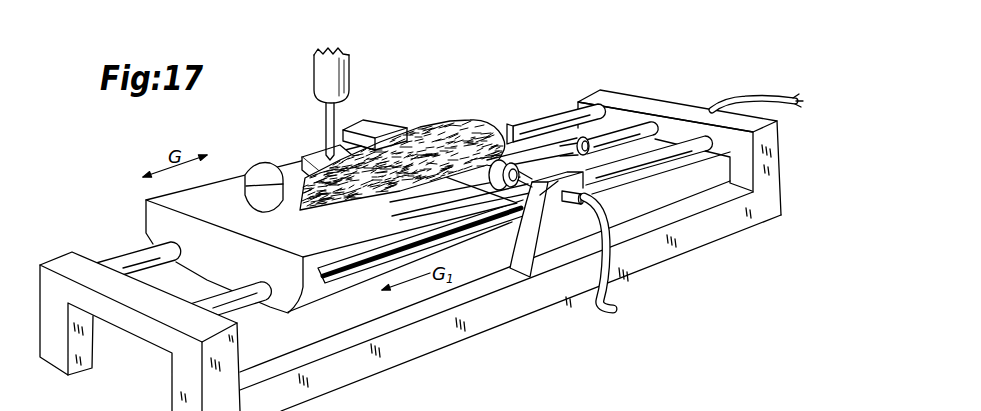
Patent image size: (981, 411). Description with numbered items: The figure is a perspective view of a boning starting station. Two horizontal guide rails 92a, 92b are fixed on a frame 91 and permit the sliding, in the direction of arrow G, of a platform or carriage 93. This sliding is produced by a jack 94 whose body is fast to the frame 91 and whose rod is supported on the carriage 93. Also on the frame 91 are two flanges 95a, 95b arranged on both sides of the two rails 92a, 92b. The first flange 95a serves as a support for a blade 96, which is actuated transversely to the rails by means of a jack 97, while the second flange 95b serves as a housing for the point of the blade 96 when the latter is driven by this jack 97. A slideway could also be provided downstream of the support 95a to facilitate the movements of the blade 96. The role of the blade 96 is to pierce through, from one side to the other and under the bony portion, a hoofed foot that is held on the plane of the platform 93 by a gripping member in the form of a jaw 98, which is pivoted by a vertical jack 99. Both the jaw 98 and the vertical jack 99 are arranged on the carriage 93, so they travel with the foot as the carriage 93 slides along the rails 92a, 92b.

The frame 91 is at (34, 283).
The horizontal guide rail 92a is at (688, 150).
The horizontal guide rail 92b is at (558, 120).
The platform or carriage 93 is at (151, 223).
The jack 94 is at (618, 130).
The flange 95a is at (567, 240).
The flange 95b is at (372, 127).
The blade 96 is at (410, 143).
The jack 97 is at (520, 190).
The jaw 98 is at (315, 150).
The vertical jack 99 is at (347, 86).